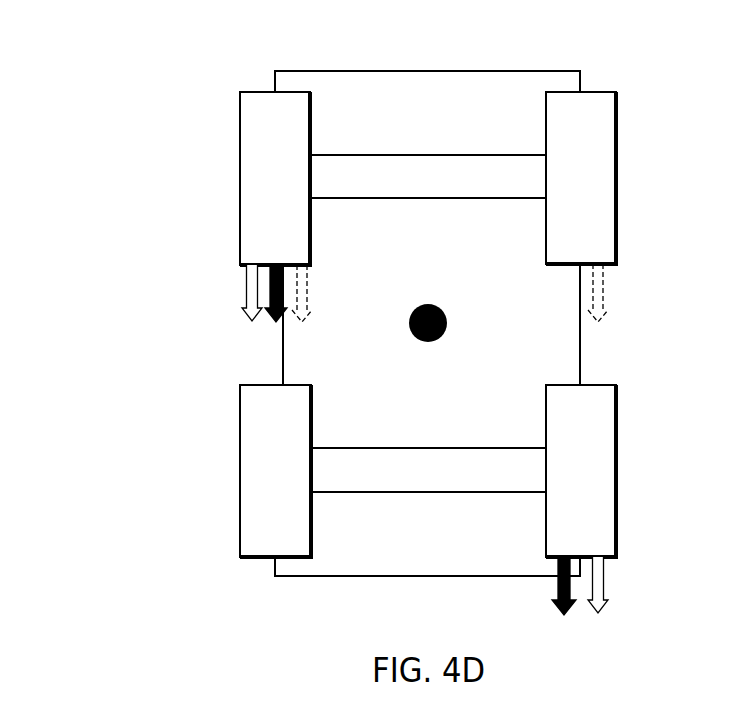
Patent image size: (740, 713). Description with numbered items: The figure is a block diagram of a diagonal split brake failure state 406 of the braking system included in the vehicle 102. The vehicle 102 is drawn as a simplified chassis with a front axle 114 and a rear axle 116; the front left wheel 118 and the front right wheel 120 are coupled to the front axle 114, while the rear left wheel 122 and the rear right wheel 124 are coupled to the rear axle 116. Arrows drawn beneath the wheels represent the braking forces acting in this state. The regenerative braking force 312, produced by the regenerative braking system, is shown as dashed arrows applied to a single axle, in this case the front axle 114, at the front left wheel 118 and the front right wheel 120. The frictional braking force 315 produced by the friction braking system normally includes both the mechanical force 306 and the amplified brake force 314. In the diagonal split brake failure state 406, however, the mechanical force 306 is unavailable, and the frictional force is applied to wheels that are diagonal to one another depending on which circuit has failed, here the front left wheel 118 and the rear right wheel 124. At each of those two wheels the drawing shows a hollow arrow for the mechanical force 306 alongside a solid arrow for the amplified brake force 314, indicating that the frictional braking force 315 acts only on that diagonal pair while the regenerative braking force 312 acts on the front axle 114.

The diagonal split brake failure state 406 is at (112, 54).
The vehicle 102 is at (283, 369).
The front axle 114 is at (430, 198).
The rear axle 116 is at (430, 493).
The front left wheel 118 is at (240, 178).
The front right wheel 120 is at (618, 182).
The rear left wheel 122 is at (240, 470).
The rear right wheel 124 is at (618, 472).
The mechanical force 306 is at (246, 287).
The regenerative braking force 312 is at (308, 291).
The amplified brake force 314 is at (266, 318).
The frictional braking force 315 is at (126, 287).